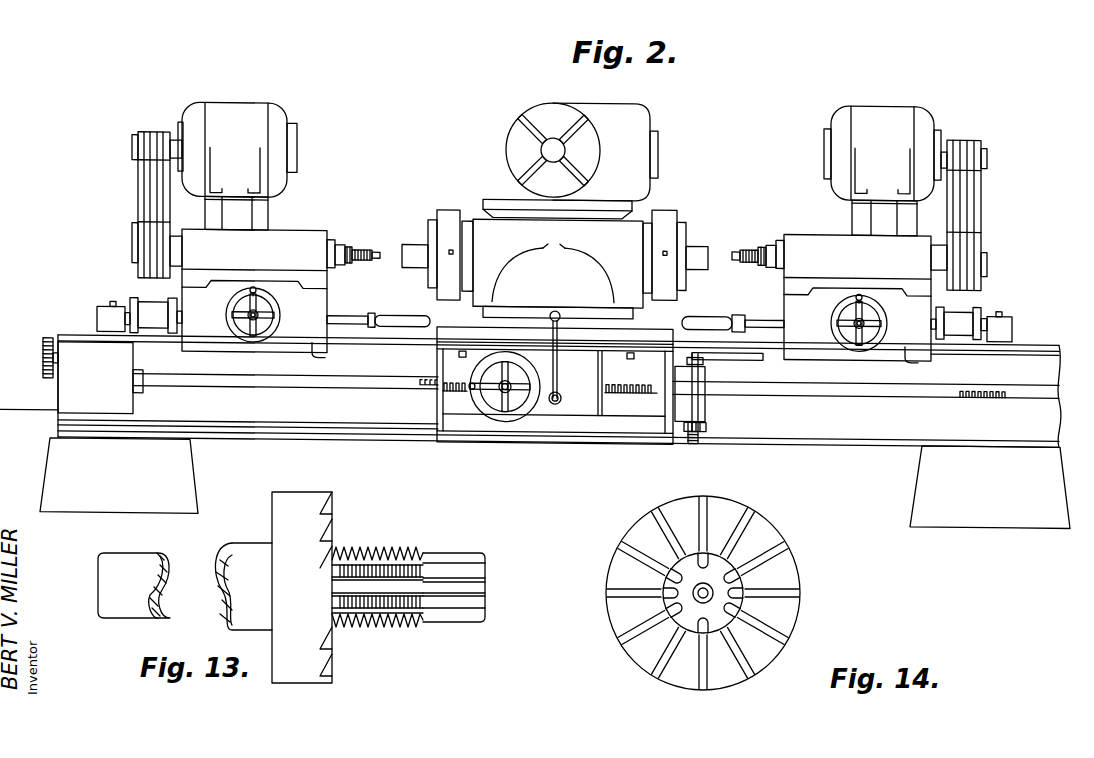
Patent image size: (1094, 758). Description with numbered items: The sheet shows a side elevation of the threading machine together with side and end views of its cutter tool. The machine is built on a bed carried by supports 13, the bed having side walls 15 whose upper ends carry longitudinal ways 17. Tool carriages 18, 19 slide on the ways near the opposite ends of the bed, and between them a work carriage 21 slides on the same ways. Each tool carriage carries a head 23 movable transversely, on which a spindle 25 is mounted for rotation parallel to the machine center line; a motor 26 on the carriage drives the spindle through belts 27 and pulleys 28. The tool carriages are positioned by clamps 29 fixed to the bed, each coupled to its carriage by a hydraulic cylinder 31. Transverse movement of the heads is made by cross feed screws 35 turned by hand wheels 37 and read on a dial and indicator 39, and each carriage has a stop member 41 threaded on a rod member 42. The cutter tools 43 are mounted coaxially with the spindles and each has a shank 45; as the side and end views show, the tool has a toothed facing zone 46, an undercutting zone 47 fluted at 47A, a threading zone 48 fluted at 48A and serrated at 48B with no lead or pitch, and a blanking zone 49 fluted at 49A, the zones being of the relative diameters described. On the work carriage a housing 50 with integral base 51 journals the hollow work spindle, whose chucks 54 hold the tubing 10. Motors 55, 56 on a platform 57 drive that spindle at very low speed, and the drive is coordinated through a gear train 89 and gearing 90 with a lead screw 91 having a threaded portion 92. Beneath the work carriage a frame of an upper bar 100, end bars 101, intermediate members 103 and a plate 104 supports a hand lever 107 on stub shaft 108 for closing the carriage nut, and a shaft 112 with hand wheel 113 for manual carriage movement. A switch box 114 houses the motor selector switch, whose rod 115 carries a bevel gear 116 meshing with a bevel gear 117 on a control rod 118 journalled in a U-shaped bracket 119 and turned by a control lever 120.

In FIG. 2, the tubing 10 is at (416, 250).
In FIG. 2, the supports 13 is at (945, 492).
In FIG. 2, the side walls 15 is at (882, 418).
In FIG. 2, the ways 17 is at (1040, 343).
In FIG. 2, the tool carriage 18 is at (912, 350).
In FIG. 2, the tool carriage 19 is at (316, 350).
In FIG. 2, the work carriage 21 is at (440, 333).
In FIG. 2, the head 23 is at (552, 289).
In FIG. 2, the spindle 25 is at (133, 254).
In FIG. 2, the motor 26 is at (252, 108).
In FIG. 2, the belts 27 is at (140, 195).
In FIG. 2, the pulleys 28 is at (549, 206).
In FIG. 2, the clamps 29 is at (97, 320).
In FIG. 2, the cylinders 31 is at (152, 302).
In FIG. 2, the cross feed screws 35 is at (559, 318).
In FIG. 2, the hand wheels 37 is at (276, 321).
In FIG. 2, the dial and indicator 39 is at (238, 314).
In FIG. 2, the stop member 41 is at (555, 309).
In FIG. 2, the threaded rod member 42 is at (350, 318).
In FIG. 2, the cutter tool 43 is at (365, 243).
In FIG. 13, the cutter tool 43 is at (438, 524).
In FIG. 13, the shank 45 is at (140, 553).
In FIG. 13, the facing zone 46 is at (335, 506).
In FIG. 14, the facing zone 46 is at (850, 627).
In FIG. 13, the undercutting zone 47 is at (336, 628).
In FIG. 14, the undercutting zone 47 is at (703, 593).
In FIG. 13, the flutes 47A is at (326, 586).
In FIG. 14, the flutes 47A is at (767, 608).
In FIG. 13, the threading zone 48 is at (369, 604).
In FIG. 14, the threading zone 48 is at (703, 589).
In FIG. 13, the flutes 48A is at (400, 622).
In FIG. 14, the flutes 48A is at (724, 589).
In FIG. 13, the serrations 48B is at (390, 556).
In FIG. 14, the serrations 48B is at (732, 593).
In FIG. 13, the blanking zone 49 is at (473, 575).
In FIG. 14, the blanking zone 49 is at (681, 599).
In FIG. 13, the flutes 49A is at (466, 566).
In FIG. 14, the flutes 49A is at (635, 579).
In FIG. 2, the housing 50 is at (486, 288).
In FIG. 2, the base 51 is at (615, 316).
In FIG. 2, the chucks 54 is at (452, 212).
In FIG. 2, the motor 55 is at (582, 143).
In FIG. 2, the motor 56 is at (535, 116).
In FIG. 2, the platform 57 is at (504, 206).
In FIG. 2, the gear train 89 is at (43, 360).
In FIG. 2, the gearing 90 is at (110, 360).
In FIG. 2, the lead screw 91 is at (175, 385).
In FIG. 2, the threaded portion 92 is at (400, 388).
In FIG. 2, the upper horizontal bar 100 is at (535, 376).
In FIG. 2, the vertical end bars 101 is at (440, 404).
In FIG. 2, the intermediate vertical members 103 is at (468, 380).
In FIG. 2, the plate 104 is at (546, 344).
In FIG. 2, the hand lever 107 is at (563, 372).
In FIG. 2, the stub shaft 108 is at (561, 398).
In FIG. 2, the shaft 112 is at (515, 385).
In FIG. 2, the hand wheel 113 is at (500, 416).
In FIG. 2, the switch box 114 is at (30, 416).
In FIG. 2, the rod 115 is at (586, 440).
In FIG. 2, the bevel gear 116 is at (690, 444).
In FIG. 2, the bevel gear 117 is at (705, 427).
In FIG. 2, the control rod 118 is at (737, 409).
In FIG. 2, the U-shaped bracket 119 is at (702, 366).
In FIG. 2, the control lever 120 is at (756, 360).